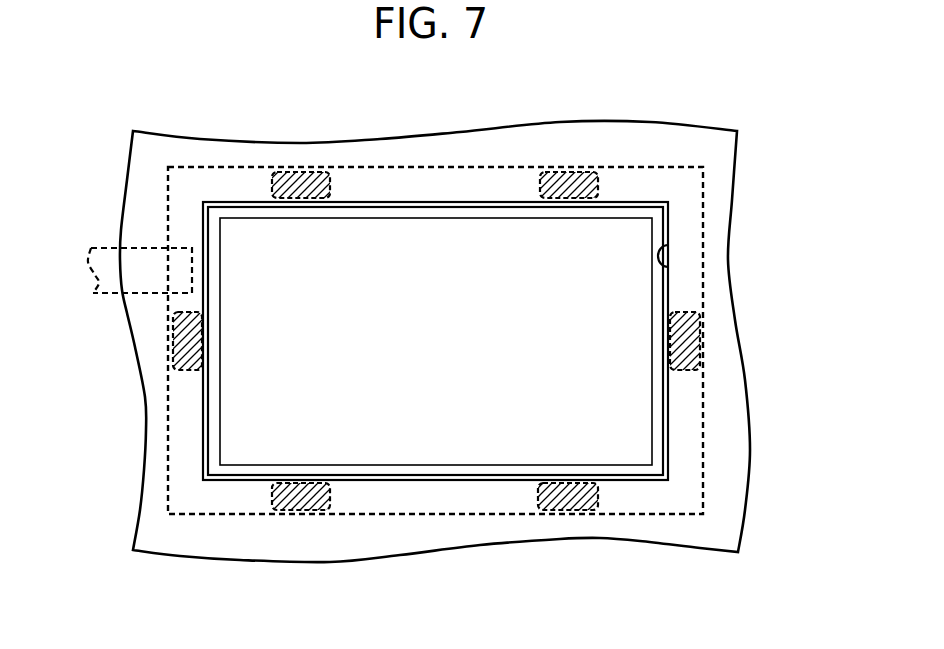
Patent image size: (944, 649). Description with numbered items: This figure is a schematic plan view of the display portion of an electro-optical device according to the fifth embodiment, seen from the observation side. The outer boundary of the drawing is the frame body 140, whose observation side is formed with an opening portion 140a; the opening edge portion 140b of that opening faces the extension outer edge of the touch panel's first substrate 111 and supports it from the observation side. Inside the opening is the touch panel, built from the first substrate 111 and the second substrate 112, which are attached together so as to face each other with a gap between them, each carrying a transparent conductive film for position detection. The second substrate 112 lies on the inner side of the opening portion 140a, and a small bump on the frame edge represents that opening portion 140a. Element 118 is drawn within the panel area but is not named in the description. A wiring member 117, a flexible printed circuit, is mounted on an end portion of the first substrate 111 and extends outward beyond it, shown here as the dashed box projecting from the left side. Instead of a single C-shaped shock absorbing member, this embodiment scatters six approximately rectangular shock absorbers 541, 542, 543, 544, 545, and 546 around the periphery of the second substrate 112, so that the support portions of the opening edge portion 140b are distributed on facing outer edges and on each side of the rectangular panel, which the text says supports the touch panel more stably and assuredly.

The first substrate 111 is at (213, 167).
The second substrate 112 is at (666, 425).
The wiring member 117 is at (90, 269).
The display panel 118 is at (434, 468).
The frame body 140 is at (143, 450).
The opening portion 140a is at (667, 248).
The opening edge portion 140b is at (687, 210).
The shock absorber 541 is at (173, 342).
The shock absorber 542 is at (302, 513).
The shock absorber 543 is at (570, 513).
The shock absorber 544 is at (702, 340).
The shock absorber 545 is at (568, 172).
The shock absorber 546 is at (302, 172).